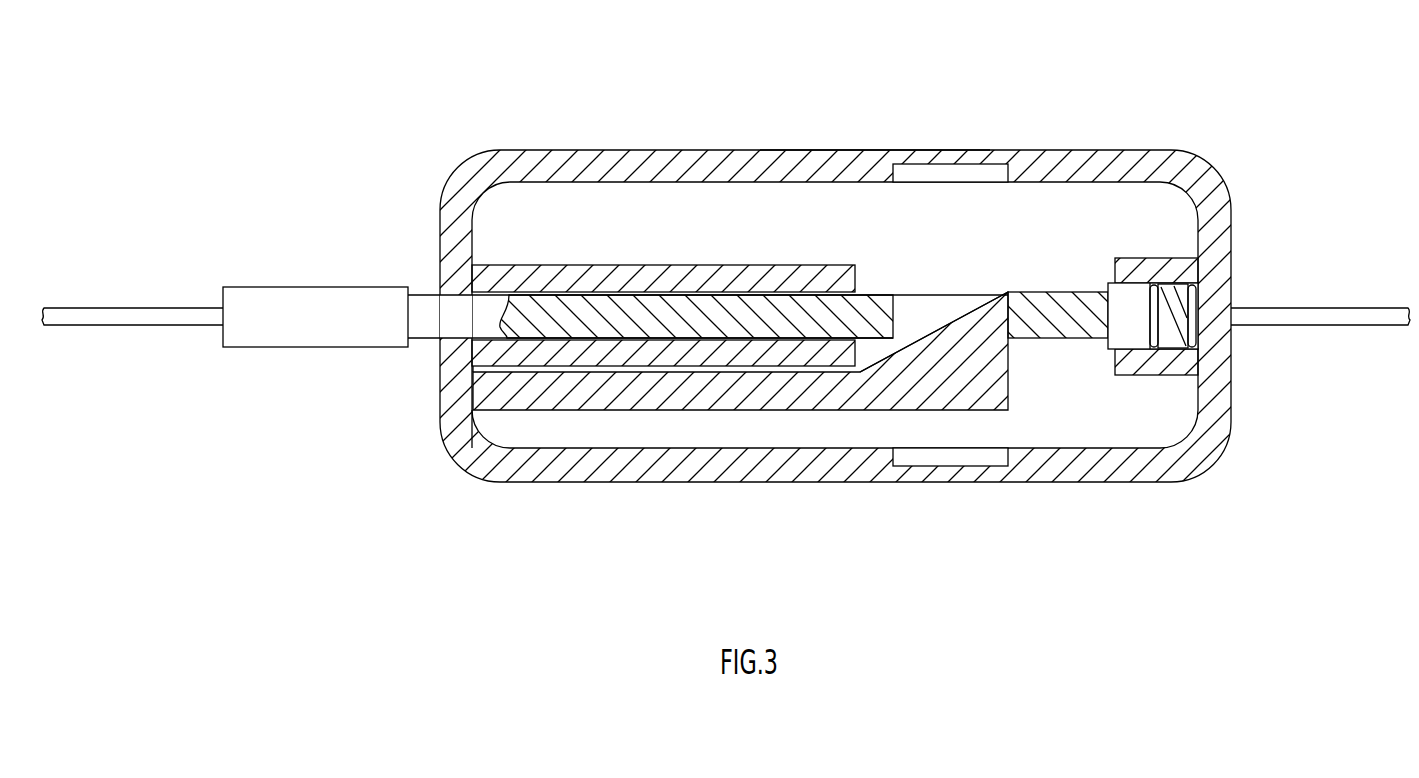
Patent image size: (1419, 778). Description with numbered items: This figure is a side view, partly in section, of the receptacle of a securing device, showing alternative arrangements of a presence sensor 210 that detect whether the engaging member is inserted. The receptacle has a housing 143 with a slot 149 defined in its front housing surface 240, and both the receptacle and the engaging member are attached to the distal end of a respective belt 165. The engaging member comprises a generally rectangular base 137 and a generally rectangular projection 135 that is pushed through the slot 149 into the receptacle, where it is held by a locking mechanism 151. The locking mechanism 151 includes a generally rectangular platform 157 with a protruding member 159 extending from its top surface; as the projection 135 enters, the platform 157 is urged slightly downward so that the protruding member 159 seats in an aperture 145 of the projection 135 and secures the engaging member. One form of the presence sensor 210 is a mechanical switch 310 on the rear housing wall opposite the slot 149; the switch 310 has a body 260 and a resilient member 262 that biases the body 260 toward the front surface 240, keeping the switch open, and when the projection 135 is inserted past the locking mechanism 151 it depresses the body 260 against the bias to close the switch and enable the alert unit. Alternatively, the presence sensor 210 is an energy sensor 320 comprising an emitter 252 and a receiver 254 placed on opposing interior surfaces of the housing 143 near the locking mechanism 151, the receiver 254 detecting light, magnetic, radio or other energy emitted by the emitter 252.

The presence sensor 210 is at (937, 108).
The housing 143 is at (585, 483).
The energy sensor 320 is at (868, 168).
The emitter 252 is at (943, 186).
The receiver 254 is at (990, 444).
The front housing surface 240 is at (440, 392).
The slot 149 is at (437, 292).
The base 137 is at (292, 287).
The aperture 145 is at (933, 310).
The platform 157 is at (637, 412).
The locking mechanism 151 is at (815, 421).
The protruding member 159 is at (958, 315).
The projection 135 is at (1040, 305).
The mechanical switch 310 is at (1100, 258).
The body 260 is at (1113, 350).
The resilient member 262 is at (1186, 306).
The belt 165 is at (165, 308).